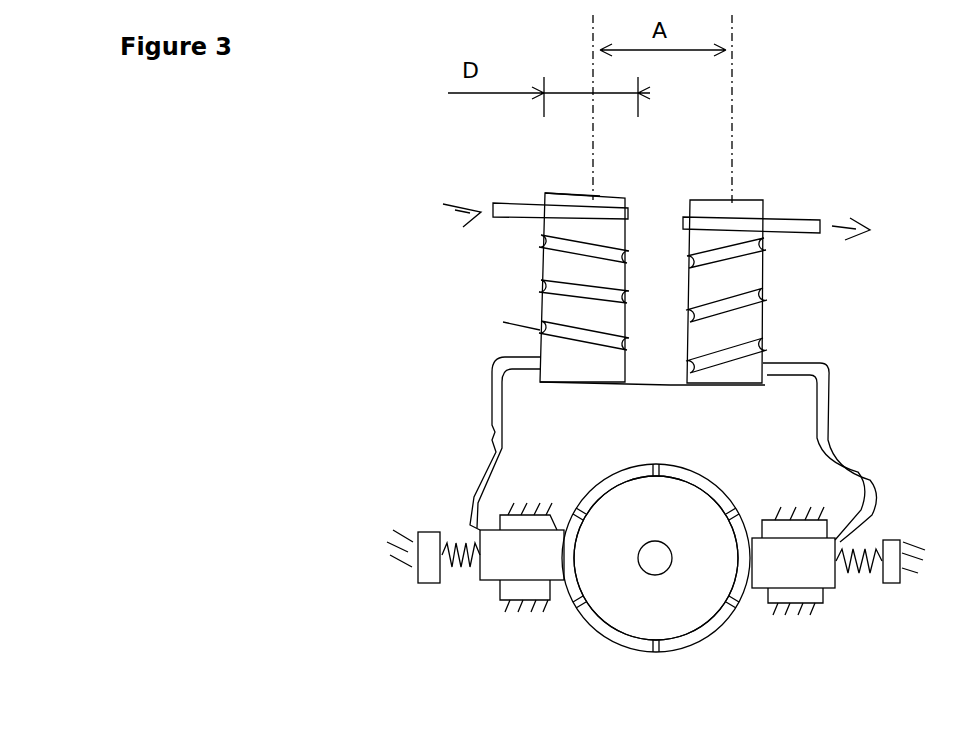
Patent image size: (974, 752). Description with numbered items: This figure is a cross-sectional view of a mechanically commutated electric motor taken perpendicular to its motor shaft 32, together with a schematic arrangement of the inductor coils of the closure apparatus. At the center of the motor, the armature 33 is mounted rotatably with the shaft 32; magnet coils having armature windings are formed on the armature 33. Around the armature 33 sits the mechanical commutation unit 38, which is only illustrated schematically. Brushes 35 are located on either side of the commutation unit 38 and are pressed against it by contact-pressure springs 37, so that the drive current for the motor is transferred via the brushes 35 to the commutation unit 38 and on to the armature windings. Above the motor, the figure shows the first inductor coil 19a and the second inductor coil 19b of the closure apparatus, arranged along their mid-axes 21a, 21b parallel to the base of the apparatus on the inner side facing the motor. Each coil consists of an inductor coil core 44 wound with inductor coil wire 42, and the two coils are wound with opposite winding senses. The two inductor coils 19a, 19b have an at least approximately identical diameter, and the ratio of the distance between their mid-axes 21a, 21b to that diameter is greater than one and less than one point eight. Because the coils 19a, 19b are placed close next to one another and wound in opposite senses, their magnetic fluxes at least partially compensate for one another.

The first inductor coil 19a is at (557, 267).
The second inductor coil 19b is at (752, 277).
The mid-axis of first inductor coil 21a is at (592, 162).
The mid-axis of second inductor coil 21b is at (740, 92).
The motor shaft 32 is at (653, 552).
The armature 33 is at (642, 622).
The brushes 35 is at (563, 583).
The contact-pressure springs 37 is at (452, 575).
The mechanical commutation unit 38 is at (682, 647).
The inductor coil wire 42 is at (770, 340).
The inductor coil cores 44 is at (752, 205).